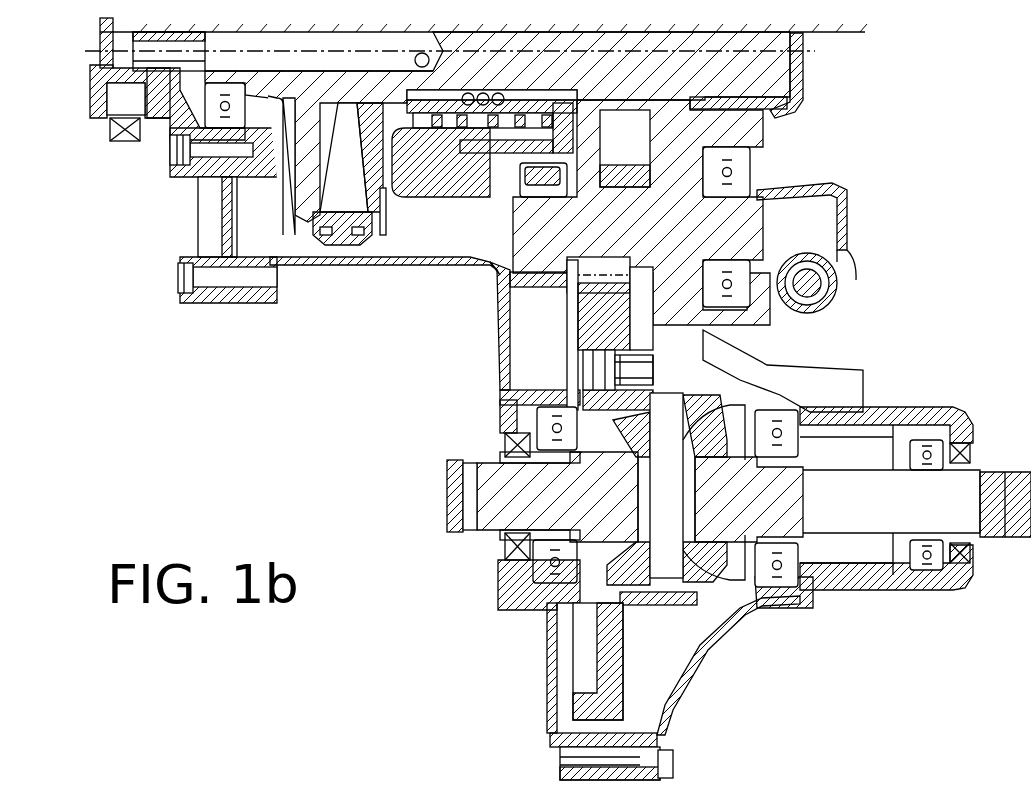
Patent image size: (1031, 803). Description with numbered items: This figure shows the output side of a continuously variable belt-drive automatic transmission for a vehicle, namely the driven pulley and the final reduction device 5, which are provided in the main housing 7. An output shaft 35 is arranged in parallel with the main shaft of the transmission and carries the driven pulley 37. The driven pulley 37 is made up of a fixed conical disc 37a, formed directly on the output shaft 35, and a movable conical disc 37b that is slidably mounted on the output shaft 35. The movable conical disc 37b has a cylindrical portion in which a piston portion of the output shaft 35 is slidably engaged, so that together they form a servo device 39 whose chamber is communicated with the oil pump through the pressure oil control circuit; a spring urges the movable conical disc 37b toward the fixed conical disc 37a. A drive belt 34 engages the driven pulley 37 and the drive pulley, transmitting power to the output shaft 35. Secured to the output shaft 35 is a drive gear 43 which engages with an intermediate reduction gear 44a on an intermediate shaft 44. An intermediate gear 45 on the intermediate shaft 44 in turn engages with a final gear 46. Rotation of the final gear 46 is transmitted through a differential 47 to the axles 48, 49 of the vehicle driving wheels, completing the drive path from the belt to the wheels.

The final reduction device 5 is at (668, 632).
The main housing 7 is at (418, 264).
The drive belt 34 is at (353, 247).
The output shaft 35 is at (776, 73).
The driven pulley 37 is at (298, 238).
The fixed conical disc 37a is at (303, 174).
The movable conical disc 37b is at (381, 207).
The servo device 39 is at (468, 176).
The drive gear 43 is at (672, 112).
The intermediate shaft 44 is at (823, 220).
The intermediate reduction gear 44a is at (713, 333).
The intermediate gear 45 is at (613, 176).
The final gear 46 is at (582, 668).
The differential 47 is at (727, 590).
The axle 48 is at (455, 520).
The axle 49 is at (993, 478).